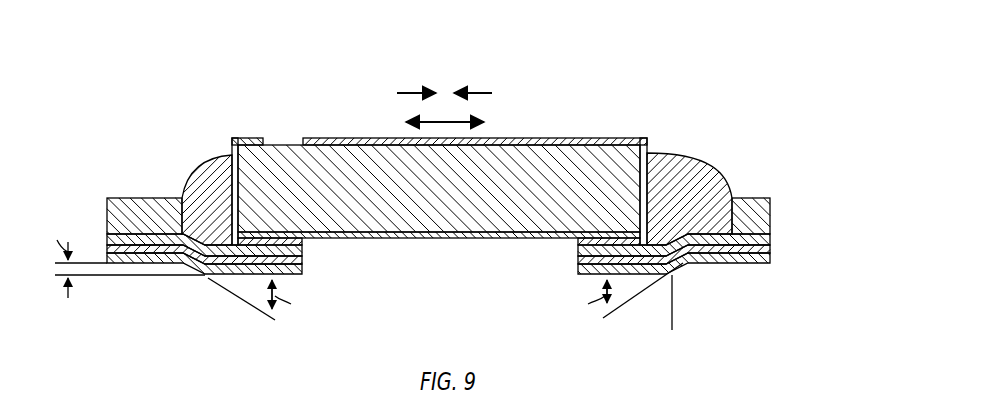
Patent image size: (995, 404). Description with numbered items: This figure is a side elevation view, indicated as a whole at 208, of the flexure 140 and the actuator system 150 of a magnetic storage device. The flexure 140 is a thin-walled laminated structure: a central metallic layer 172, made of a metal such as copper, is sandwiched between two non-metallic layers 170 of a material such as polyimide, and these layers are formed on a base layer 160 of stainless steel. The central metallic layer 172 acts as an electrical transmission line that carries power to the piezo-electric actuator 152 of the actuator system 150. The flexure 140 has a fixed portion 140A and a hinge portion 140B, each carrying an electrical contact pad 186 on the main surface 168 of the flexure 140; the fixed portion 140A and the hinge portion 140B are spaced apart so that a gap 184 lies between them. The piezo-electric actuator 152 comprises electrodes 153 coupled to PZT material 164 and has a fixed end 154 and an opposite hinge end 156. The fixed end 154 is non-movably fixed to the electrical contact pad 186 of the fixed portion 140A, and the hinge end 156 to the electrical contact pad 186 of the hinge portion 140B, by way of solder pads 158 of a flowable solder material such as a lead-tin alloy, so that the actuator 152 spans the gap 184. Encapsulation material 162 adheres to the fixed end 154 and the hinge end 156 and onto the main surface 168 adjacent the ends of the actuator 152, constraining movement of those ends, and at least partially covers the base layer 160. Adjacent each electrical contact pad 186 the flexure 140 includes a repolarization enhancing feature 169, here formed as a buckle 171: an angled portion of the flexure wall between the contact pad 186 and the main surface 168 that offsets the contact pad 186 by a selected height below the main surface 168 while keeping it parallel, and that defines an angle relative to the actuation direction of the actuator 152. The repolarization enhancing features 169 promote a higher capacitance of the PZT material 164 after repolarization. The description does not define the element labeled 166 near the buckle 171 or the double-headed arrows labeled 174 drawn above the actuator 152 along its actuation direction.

The electronic device assembly 208 is at (118, 122).
The actuator system 150 is at (646, 68).
The piezo-electric actuator 152 is at (330, 133).
The electrodes 153 is at (528, 138).
The fixed end 154 is at (640, 170).
The hinge end 156 is at (247, 183).
The solder pad 158 is at (272, 240).
The base layer 160 is at (148, 200).
The encapsulation material 162 is at (200, 180).
The PZT material 164 is at (455, 215).
The bend region of flexible circuit 166 is at (243, 240).
The main surface 168 is at (147, 268).
The repolarization enhancing feature 169 is at (197, 283).
The non-metallic layers 170 is at (183, 256).
The buckle 171 is at (191, 270).
The central metallic layer 172 is at (302, 258).
The direction of movement arrows 174 is at (452, 66).
The gap 184 is at (402, 254).
The electrical contact pad 186 is at (302, 250).
The flexure 140 is at (145, 281).
The fixed portion 140A is at (577, 277).
The hinge portion 140B is at (300, 310).